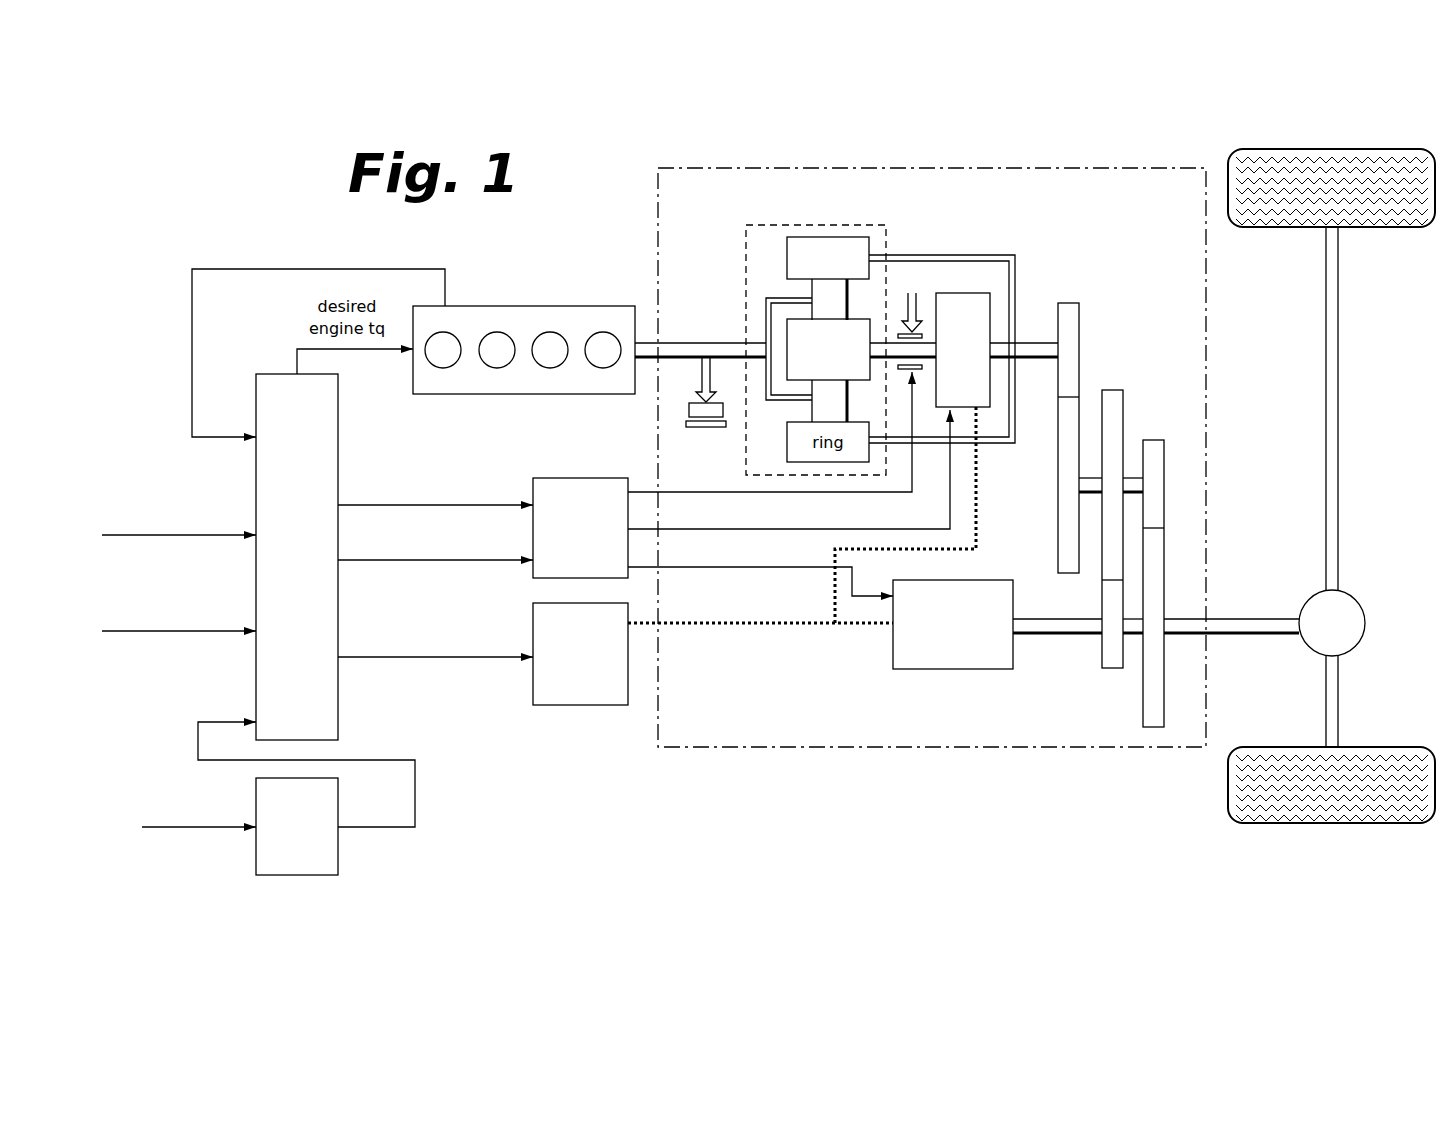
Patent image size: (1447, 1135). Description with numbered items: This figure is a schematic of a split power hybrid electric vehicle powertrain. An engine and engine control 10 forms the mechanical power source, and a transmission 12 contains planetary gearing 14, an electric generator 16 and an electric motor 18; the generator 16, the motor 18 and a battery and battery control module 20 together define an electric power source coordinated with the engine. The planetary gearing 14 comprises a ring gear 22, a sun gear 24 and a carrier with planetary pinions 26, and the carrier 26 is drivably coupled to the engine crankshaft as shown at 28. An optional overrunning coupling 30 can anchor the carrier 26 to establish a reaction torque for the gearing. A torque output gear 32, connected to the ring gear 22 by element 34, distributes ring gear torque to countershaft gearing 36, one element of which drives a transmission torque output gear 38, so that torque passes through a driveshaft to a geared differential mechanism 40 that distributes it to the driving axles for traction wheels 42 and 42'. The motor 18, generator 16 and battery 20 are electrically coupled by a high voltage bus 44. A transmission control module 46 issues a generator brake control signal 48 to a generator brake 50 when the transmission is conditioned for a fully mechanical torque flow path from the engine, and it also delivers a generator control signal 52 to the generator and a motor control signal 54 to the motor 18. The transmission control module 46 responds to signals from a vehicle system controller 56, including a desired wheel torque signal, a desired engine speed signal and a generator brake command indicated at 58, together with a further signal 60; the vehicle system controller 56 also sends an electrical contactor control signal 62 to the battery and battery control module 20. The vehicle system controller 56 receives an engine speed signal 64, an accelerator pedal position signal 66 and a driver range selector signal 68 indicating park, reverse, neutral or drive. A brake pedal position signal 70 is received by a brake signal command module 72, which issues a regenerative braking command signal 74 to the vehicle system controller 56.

The engine and engine control 10 is at (557, 398).
The transmission 12 is at (1160, 165).
The planetary gearing 14 is at (870, 218).
The electric generator 16 is at (995, 300).
The electric motor 18 is at (960, 669).
The battery and battery control module 20 is at (575, 705).
The ring gear 22 is at (787, 262).
The sun gear 24 is at (787, 330).
The carrier with planetary pinions 26 is at (767, 298).
The drivable coupling to engine crankshaft 28 is at (672, 342).
The overrunning coupling 30 is at (689, 407).
The torque output gear 32 is at (1080, 332).
The connecting element 34 is at (948, 257).
The countershaft gearing 36 is at (1124, 413).
The transmission torque output gear 38 is at (1165, 555).
The geared differential mechanism 40 is at (1305, 601).
The traction wheel 42 is at (1331, 210).
The traction wheel 42' is at (1332, 765).
The high voltage bus 44 is at (855, 628).
The transmission control module 46 is at (575, 478).
The generator brake control signal 48 is at (668, 492).
The generator brake 50 is at (898, 370).
The generator control signal 52 is at (945, 503).
The motor control signal 54 is at (685, 572).
The vehicle system controller 56 is at (256, 395).
The desired wheel torque, desired engine speed and generator brake command signals 58 is at (398, 510).
The motor torque command signal 60 is at (398, 565).
The electrical contactor control signal 62 is at (398, 662).
The engine speed signal 64 is at (362, 269).
The accelerator pedal position signal 66 is at (148, 634).
The driver range selector signal 68 is at (148, 538).
The brake pedal position signal 70 is at (165, 830).
The brake signal command module 72 is at (256, 853).
The regenerative braking command signal 74 is at (415, 780).